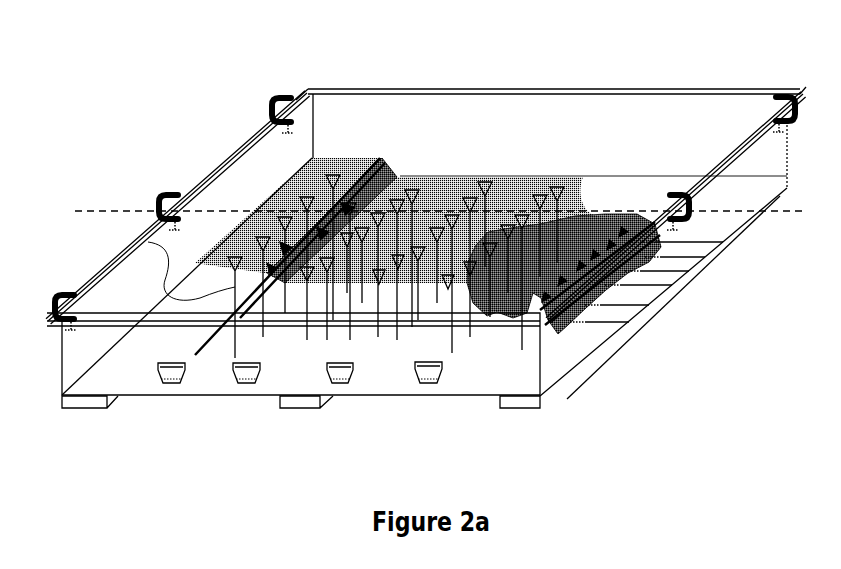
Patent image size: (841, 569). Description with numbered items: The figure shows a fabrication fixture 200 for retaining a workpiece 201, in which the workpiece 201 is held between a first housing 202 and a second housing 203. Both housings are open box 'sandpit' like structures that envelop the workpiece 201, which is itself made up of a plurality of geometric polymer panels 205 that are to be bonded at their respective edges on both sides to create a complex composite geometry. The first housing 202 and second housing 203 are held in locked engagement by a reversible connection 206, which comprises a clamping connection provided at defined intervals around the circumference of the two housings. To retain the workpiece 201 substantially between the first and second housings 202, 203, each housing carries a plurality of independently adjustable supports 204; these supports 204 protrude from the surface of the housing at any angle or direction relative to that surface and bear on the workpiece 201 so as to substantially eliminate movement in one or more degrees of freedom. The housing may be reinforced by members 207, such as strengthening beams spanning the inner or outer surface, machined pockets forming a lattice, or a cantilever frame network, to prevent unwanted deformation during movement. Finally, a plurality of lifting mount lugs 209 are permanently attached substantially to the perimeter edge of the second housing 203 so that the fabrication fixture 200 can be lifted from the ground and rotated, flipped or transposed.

The fabrication fixture 200 is at (447, 76).
The workpiece 201 is at (347, 160).
The first housing 202 is at (683, 90).
The second housing 203 is at (423, 395).
The independently adjustable supports 204 is at (132, 243).
The geometric polymer panels 205 is at (287, 193).
The reversible connection 206 is at (687, 217).
The members 207 is at (540, 400).
The lifting mount lugs 209 is at (167, 383).